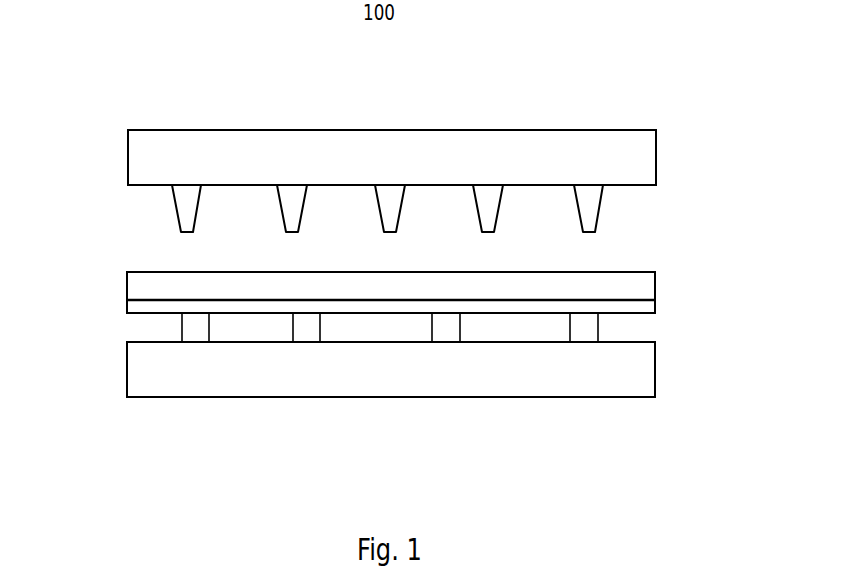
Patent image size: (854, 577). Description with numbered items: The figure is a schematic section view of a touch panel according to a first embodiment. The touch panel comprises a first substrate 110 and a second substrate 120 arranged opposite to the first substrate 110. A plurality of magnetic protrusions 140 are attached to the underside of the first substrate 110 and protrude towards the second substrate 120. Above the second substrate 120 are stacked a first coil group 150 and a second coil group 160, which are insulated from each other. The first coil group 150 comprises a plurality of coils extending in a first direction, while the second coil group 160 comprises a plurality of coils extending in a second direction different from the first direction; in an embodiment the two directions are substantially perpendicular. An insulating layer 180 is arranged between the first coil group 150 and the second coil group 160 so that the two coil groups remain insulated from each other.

The first substrate 110 is at (583, 147).
The second substrate 120 is at (448, 373).
The magnetic protrusions 140 is at (593, 197).
The first coil group 150 is at (632, 288).
The second coil group 160 is at (167, 326).
The insulating layer 180 is at (625, 307).